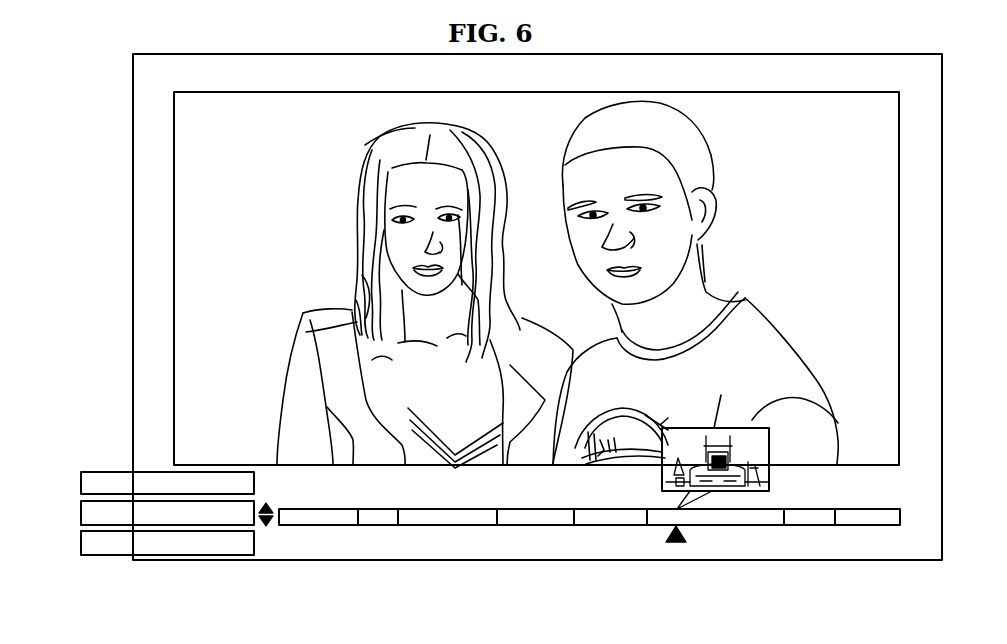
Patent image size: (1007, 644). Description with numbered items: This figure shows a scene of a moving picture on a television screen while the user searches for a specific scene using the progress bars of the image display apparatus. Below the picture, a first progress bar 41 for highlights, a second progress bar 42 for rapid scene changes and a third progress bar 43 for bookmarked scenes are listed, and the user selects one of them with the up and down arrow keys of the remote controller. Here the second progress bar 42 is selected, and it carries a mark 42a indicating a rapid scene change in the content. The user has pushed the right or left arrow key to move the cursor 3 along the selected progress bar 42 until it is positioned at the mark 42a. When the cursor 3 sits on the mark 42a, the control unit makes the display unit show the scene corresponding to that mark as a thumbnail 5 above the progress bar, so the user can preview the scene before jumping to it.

The first progress bar 41 is at (80, 485).
The second progress bar 42 is at (80, 515).
The third progress bar 43 is at (80, 545).
The cursor 3 is at (670, 545).
The mark 42a is at (684, 527).
The thumbnail 5 is at (770, 472).